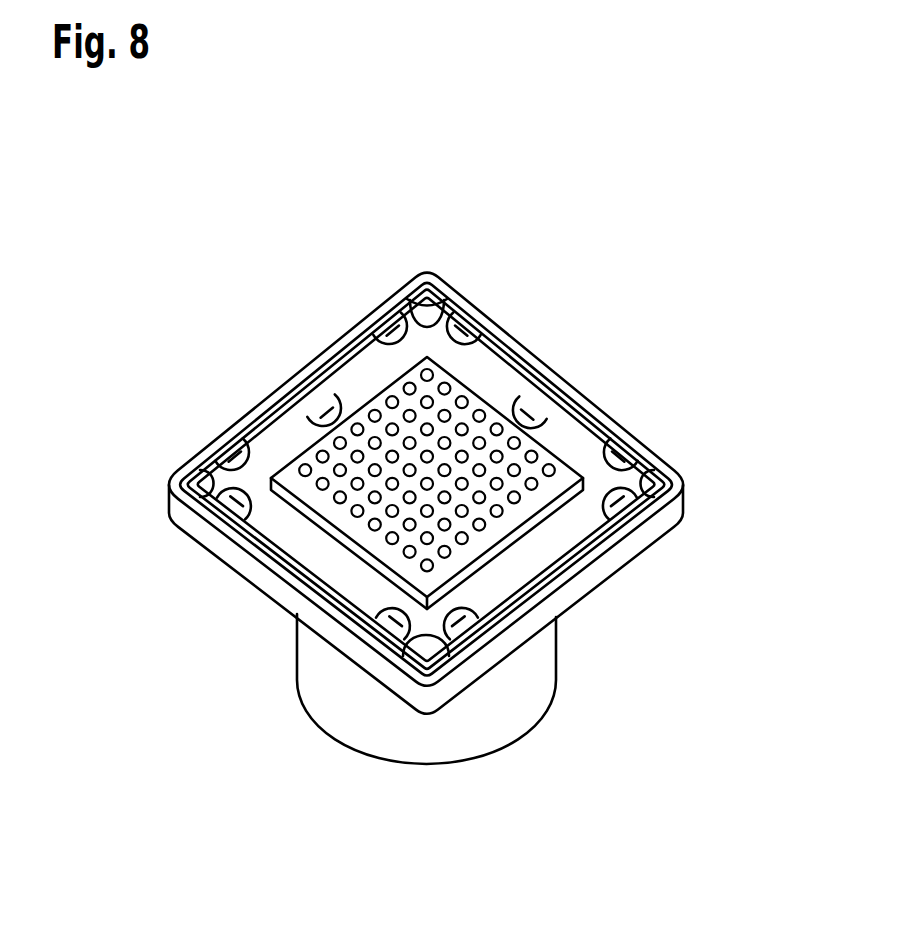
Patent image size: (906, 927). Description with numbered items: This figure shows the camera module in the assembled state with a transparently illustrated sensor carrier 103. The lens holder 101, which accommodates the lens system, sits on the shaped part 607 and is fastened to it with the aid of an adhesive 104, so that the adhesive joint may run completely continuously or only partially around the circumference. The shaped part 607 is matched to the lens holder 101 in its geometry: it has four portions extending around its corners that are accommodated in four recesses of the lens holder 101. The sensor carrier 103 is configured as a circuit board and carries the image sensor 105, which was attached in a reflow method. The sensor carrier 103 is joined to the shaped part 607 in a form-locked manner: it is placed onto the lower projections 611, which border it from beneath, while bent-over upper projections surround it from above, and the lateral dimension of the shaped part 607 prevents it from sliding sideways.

The lens holder 101 is at (527, 673).
The sensor carrier 103 is at (502, 374).
The adhesive 104 is at (666, 461).
The image sensor 105 is at (371, 431).
The shaped part 607 is at (278, 547).
The lower projections 611 is at (230, 448).